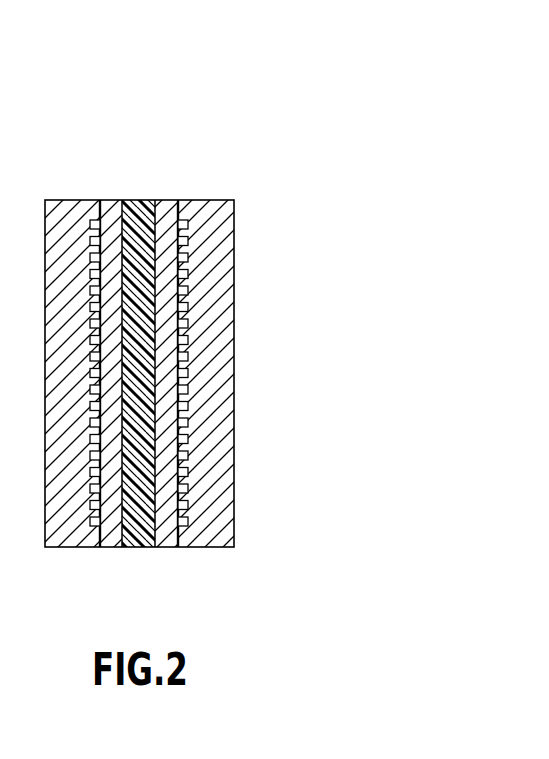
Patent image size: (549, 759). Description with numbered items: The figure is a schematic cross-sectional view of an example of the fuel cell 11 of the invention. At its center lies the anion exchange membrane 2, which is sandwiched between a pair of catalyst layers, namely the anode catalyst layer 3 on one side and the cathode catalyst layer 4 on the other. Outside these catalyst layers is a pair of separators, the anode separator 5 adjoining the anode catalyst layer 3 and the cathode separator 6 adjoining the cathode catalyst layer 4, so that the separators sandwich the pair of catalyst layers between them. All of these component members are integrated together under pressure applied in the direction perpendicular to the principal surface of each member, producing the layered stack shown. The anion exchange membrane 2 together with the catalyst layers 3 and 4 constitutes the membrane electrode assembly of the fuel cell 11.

The fuel cell 11 is at (338, 85).
The anion exchange membrane 2 is at (140, 538).
The anode catalyst layer 3 is at (167, 211).
The cathode catalyst layer 4 is at (108, 211).
The anode separator 5 is at (212, 213).
The cathode separator 6 is at (61, 208).